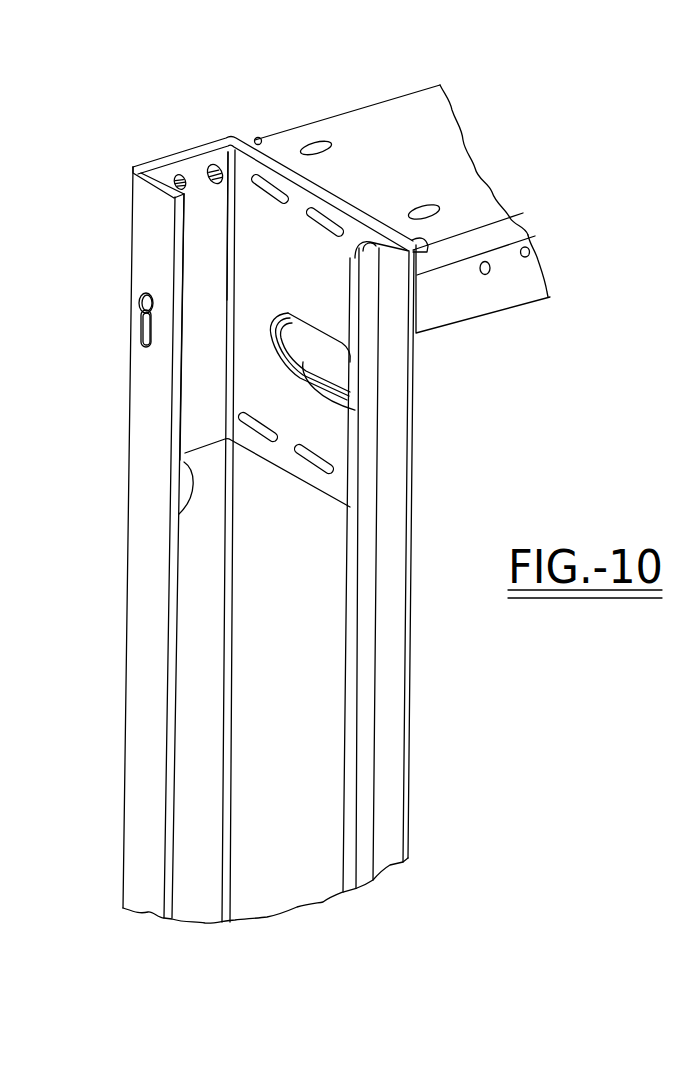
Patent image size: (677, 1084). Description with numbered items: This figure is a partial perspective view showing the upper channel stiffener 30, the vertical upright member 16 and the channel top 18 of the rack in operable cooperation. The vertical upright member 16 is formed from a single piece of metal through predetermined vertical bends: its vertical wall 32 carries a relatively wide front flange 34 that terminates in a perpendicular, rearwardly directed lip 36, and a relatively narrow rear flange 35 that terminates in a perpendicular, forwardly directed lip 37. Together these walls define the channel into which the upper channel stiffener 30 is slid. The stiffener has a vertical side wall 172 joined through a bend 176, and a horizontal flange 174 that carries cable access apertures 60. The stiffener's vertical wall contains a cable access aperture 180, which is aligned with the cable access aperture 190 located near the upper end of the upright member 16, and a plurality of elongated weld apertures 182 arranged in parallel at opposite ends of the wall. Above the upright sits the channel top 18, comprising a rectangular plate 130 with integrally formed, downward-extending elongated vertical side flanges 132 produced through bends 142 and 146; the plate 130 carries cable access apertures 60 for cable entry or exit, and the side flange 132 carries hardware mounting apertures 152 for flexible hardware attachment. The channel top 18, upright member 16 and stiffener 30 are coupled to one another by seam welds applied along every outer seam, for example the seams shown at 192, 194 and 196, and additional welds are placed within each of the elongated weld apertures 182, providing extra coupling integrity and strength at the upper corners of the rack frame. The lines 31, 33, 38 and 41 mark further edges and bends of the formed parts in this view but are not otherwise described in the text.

The vertical upright member 16 is at (337, 893).
The channel top 18 is at (354, 304).
The upper channel stiffener 30 is at (247, 362).
The fold of post 31 is at (170, 618).
The vertical wall 32 is at (260, 633).
The outer edge of right flange 33 is at (404, 837).
The front flange 34 is at (197, 547).
The rear flange 35 is at (390, 738).
The lip 36 is at (140, 597).
The lip 37 is at (353, 650).
The hem tip 38 is at (133, 167).
The right flange intermediate face 41 is at (367, 698).
The cable access apertures 60 is at (313, 142).
The rectangular plate 130 is at (381, 121).
The vertical side flange 132 is at (502, 295).
The bend 142 is at (257, 138).
The bend 146 is at (543, 236).
The hardware mounting apertures 152 is at (527, 255).
The vertical side wall 172 is at (194, 168).
The horizontal flange 174 is at (177, 513).
The bend 176 is at (232, 245).
The cable access aperture 180 is at (335, 360).
The elongated weld apertures 182 is at (327, 227).
The cable access aperture 190 is at (345, 410).
The seam 192 is at (268, 361).
The seam 194 is at (184, 240).
The seam 196 is at (317, 493).